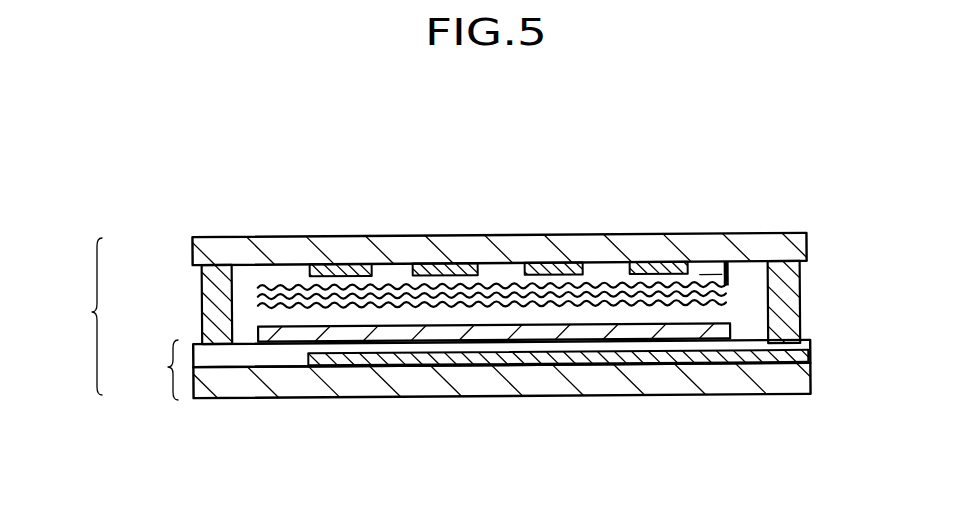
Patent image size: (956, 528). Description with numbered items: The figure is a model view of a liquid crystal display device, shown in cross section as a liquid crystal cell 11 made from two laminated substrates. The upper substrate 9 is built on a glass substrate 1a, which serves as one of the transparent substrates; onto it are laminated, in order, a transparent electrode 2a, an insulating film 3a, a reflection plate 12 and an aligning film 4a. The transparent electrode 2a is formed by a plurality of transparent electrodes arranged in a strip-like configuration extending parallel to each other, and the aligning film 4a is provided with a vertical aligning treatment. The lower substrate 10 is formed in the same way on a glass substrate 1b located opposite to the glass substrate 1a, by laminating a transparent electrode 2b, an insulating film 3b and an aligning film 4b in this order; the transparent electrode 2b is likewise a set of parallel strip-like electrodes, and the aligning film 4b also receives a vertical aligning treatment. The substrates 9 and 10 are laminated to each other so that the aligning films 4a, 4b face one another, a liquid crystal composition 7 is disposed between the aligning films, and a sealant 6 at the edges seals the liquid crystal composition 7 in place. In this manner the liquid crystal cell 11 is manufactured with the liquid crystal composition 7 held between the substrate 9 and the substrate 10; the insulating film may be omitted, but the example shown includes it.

The glass substrate 1a is at (474, 250).
The transparent electrode 2a is at (560, 272).
The insulating film 3a is at (722, 289).
The aligning film 4a is at (744, 287).
The reflection plate 12 is at (283, 286).
The liquid crystal composition 7 is at (394, 318).
The sealant 6 is at (785, 287).
The aligning film 4b is at (733, 328).
The insulating film 3b is at (738, 343).
The transparent electrode 2b is at (624, 360).
The glass substrate 1b is at (449, 388).
The substrate 9 is at (117, 315).
The substrate 10 is at (148, 370).
The liquid crystal cell 11 is at (72, 316).